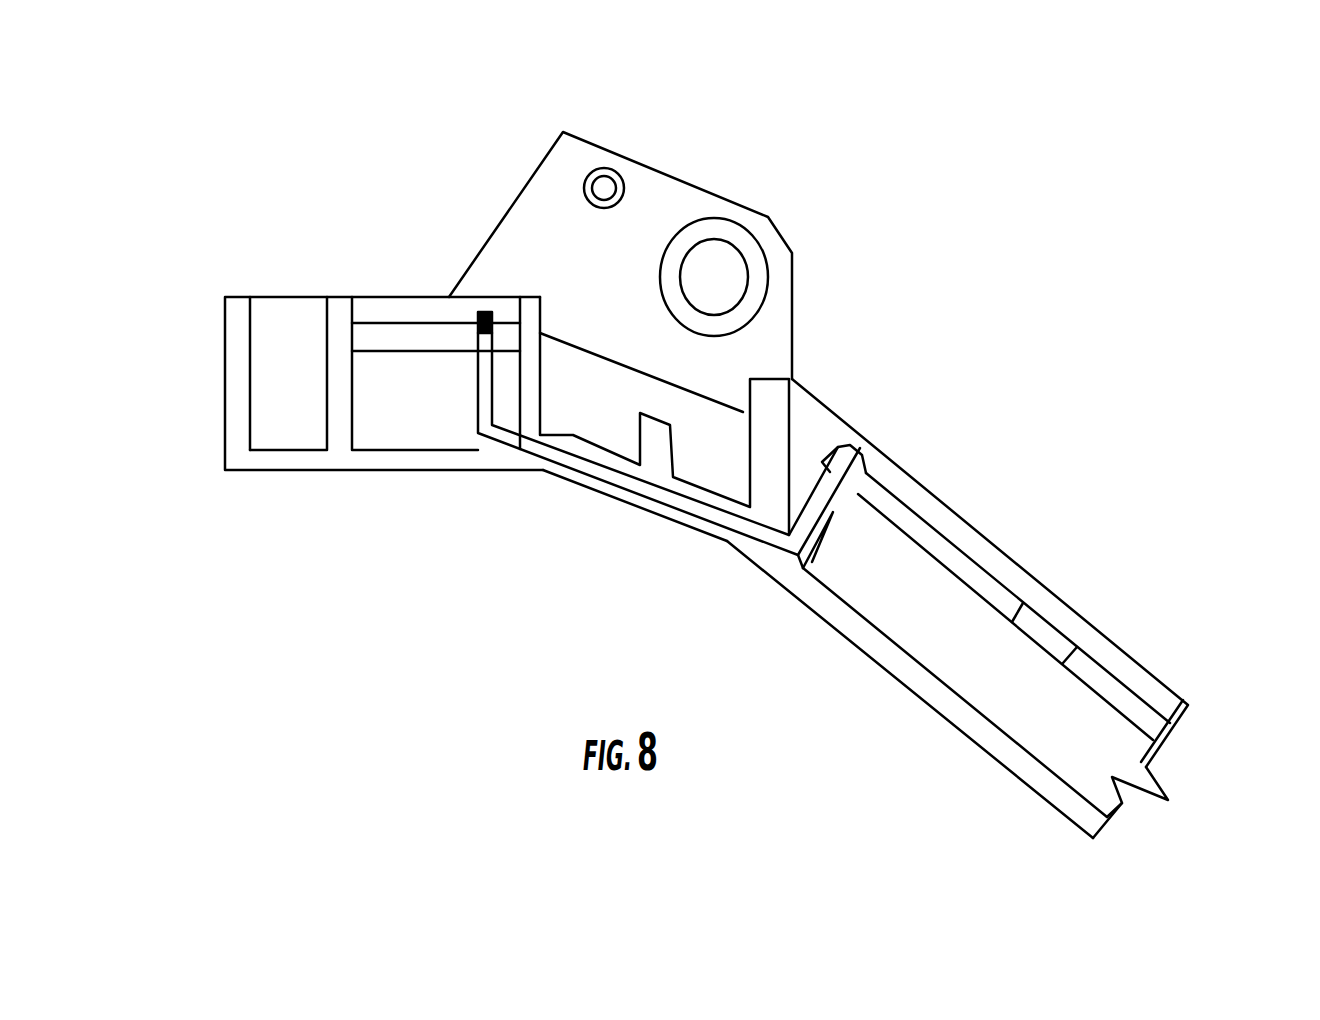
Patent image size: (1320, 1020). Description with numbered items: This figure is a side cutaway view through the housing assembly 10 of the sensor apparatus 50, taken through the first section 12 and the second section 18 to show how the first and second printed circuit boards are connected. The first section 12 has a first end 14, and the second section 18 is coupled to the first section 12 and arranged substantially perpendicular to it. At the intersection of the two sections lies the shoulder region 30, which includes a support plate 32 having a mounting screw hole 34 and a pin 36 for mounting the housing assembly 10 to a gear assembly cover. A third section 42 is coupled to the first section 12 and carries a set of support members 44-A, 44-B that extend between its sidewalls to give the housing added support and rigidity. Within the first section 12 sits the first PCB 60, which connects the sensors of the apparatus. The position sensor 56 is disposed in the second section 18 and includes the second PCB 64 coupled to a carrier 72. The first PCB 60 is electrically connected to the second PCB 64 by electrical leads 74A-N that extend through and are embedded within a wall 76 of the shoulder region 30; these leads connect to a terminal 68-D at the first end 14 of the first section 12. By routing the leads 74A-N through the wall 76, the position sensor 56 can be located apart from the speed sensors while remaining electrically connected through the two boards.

The housing assembly 10 is at (175, 338).
The first section 12 is at (371, 508).
The first end 14 is at (303, 202).
The second section 18 is at (1220, 720).
The shoulder region 30 is at (700, 147).
The support plate 32 is at (778, 337).
The mounting screw hole 34 is at (738, 272).
The pin 36 is at (604, 188).
The third section 42 is at (273, 412).
The support member 44-A is at (237, 302).
The support member 44-B is at (338, 307).
The sensor apparatus 50 is at (348, 107).
The position sensor 56 is at (1087, 577).
The first PCB 60 is at (398, 333).
The second PCB 64 is at (990, 588).
The terminal 68-D is at (482, 310).
The carrier 72 is at (910, 645).
The electrical leads 74A-N is at (655, 497).
The wall 76 is at (578, 480).